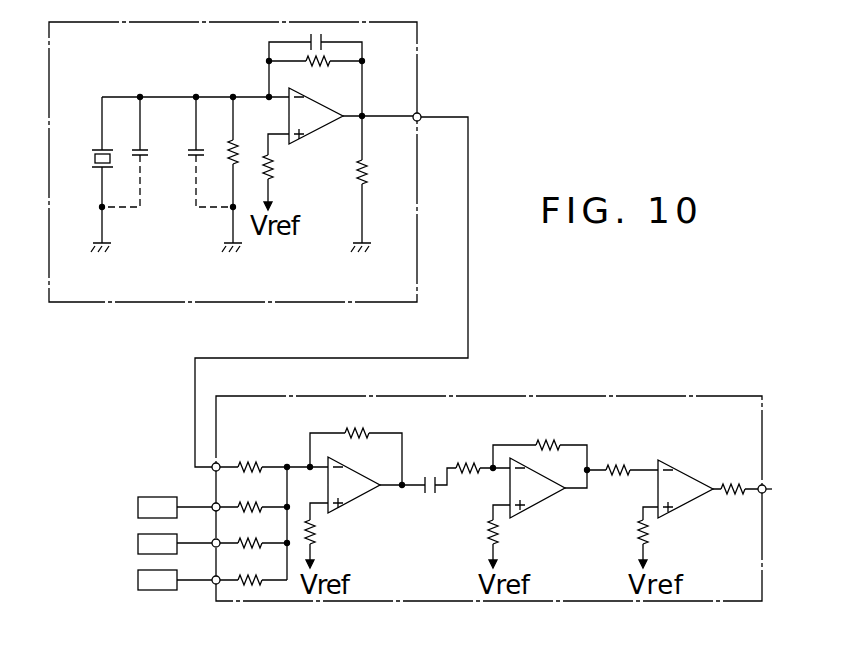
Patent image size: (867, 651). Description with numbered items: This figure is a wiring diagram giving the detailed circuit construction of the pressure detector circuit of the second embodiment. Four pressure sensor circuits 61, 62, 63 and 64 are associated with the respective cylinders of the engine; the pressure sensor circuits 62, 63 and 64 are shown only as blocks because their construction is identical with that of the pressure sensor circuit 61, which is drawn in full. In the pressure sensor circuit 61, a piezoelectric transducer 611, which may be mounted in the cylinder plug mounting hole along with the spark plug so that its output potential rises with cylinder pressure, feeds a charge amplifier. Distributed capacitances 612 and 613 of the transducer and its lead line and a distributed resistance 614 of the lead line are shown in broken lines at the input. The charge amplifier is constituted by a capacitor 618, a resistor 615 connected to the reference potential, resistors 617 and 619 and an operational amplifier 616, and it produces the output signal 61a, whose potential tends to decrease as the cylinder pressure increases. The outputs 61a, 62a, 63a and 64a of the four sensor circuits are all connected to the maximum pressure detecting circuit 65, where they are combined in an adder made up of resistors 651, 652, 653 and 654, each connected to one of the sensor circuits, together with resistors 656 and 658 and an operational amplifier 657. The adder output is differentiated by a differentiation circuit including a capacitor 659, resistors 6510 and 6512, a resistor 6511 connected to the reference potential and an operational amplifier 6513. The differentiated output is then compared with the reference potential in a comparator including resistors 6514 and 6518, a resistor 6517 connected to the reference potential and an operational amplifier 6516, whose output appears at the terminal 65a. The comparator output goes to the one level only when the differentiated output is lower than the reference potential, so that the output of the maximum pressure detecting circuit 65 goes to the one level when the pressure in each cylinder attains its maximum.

The pressure sensor circuit 61 is at (418, 70).
The output signal 61a is at (421, 114).
The piezoelectric transducer 611 is at (96, 160).
The distributed capacitance 612 is at (147, 157).
The distributed capacitance 613 is at (190, 152).
The distributed resistance 614 is at (228, 160).
The resistor 615 is at (272, 168).
The operational amplifier 616 is at (315, 133).
The resistor 617 is at (308, 63).
The capacitor 618 is at (317, 33).
The resistor 619 is at (365, 168).
The pressure sensor circuit 62 is at (138, 507).
The output 62a is at (212, 503).
The pressure sensor circuit 63 is at (138, 543).
The output 63a is at (219, 547).
The pressure sensor circuit 64 is at (138, 580).
The output 64a is at (213, 584).
The maximum pressure detecting circuit 65 is at (538, 398).
The output terminal 65a is at (772, 490).
The resistor 651 is at (248, 461).
The resistor 652 is at (274, 492).
The resistor 653 is at (274, 527).
The resistor 654 is at (252, 585).
The resistor 656 is at (314, 538).
The operational amplifier 657 is at (365, 495).
The resistor 658 is at (360, 431).
The capacitor 659 is at (430, 475).
The resistor 6510 is at (470, 461).
The resistor 6511 is at (497, 538).
The resistor 6512 is at (546, 440).
The operational amplifier 6513 is at (545, 506).
The resistor 6514 is at (617, 466).
The operational amplifier 6516 is at (672, 460).
The resistor 6517 is at (650, 540).
The resistor 6518 is at (732, 484).